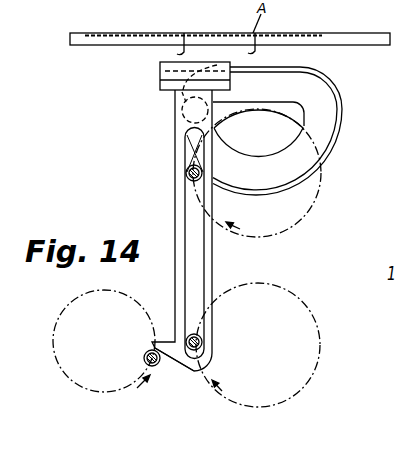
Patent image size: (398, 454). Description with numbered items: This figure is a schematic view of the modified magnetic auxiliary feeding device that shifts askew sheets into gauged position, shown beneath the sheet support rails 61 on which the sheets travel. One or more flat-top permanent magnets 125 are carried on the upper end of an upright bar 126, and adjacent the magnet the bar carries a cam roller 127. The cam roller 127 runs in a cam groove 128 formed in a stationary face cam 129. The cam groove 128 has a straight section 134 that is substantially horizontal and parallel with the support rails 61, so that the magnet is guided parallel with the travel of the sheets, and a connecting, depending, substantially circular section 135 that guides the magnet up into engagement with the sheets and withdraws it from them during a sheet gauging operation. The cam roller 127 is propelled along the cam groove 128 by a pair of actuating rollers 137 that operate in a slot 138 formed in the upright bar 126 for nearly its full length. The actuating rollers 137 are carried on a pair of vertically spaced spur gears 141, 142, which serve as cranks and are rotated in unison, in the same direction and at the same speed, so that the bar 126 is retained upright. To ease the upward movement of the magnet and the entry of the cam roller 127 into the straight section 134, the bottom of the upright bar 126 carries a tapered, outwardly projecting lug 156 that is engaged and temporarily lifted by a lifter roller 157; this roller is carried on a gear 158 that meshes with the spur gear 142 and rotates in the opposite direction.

The support rails 61 is at (352, 42).
The permanent magnets 125 is at (255, 52).
The upright bar 126 is at (181, 196).
The cam roller 127 is at (175, 121).
The cam groove 128 is at (337, 113).
The stationary face cam 129 is at (341, 116).
The straight section 134 is at (293, 87).
The circular section 135 is at (277, 178).
The actuating rollers 137 is at (186, 170).
The slot 138 is at (177, 222).
The spur gear 141 is at (298, 233).
The spur gear 142 is at (302, 389).
The lug 156 is at (169, 349).
The lifter roller 157 is at (143, 358).
The gear 158 is at (68, 377).